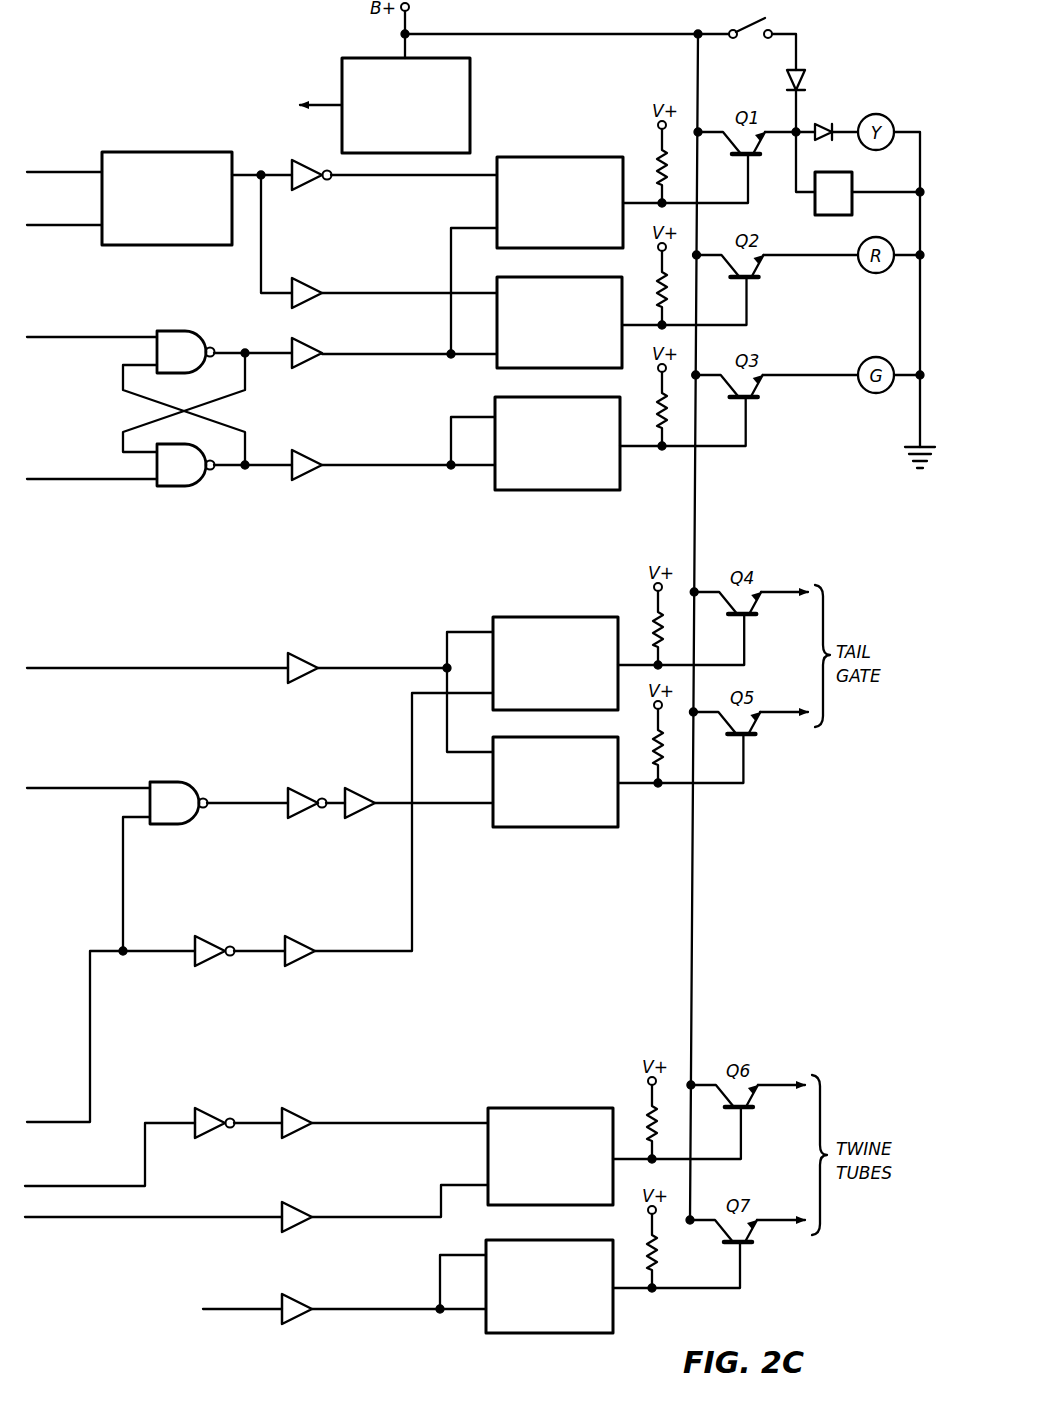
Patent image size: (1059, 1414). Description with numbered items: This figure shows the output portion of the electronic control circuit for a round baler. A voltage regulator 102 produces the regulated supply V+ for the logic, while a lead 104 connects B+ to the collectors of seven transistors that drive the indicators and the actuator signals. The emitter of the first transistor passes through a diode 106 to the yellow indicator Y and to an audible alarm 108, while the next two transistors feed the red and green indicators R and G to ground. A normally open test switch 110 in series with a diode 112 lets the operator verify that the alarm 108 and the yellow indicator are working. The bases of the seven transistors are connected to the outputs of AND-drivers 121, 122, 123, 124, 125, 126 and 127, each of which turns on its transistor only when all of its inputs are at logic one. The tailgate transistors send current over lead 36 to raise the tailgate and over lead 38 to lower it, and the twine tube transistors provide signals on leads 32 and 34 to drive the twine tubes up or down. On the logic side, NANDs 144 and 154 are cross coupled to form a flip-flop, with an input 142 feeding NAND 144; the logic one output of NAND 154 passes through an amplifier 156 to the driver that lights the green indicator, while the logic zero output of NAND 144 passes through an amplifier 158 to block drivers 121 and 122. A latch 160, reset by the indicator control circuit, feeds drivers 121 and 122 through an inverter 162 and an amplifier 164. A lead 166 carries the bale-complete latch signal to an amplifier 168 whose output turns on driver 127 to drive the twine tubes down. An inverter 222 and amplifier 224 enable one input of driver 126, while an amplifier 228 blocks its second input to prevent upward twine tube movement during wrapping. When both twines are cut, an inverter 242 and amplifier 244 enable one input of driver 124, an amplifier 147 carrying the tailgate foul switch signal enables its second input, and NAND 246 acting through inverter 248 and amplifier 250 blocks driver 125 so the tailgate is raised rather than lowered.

The voltage regulator 102 is at (363, 58).
The lead 104 is at (575, 32).
The diode 106 is at (827, 120).
The audible alarm 108 is at (815, 204).
The test switch 110 is at (728, 22).
The diode 112 is at (804, 72).
The AND-driver 121 is at (557, 158).
The AND-driver 122 is at (502, 280).
The AND-driver 123 is at (500, 402).
The AND-driver 124 is at (545, 615).
The AND-driver 125 is at (513, 742).
The AND-driver 126 is at (530, 1106).
The AND-driver 127 is at (503, 1240).
The input line 142 is at (130, 336).
The NAND 144 is at (183, 338).
The amplifier 147 is at (306, 662).
The NAND 154 is at (183, 481).
The amplifier 156 is at (305, 456).
The amplifier 158 is at (308, 345).
The latch 160 is at (183, 158).
The inverter 162 is at (308, 184).
The amplifier 164 is at (309, 288).
The lead 166 is at (260, 1308).
The amplifier 168 is at (302, 1301).
The inverter 222 is at (212, 1115).
The amplifier 224 is at (303, 1117).
The amplifier 228 is at (305, 1207).
The inverter 242 is at (210, 944).
The amplifier 244 is at (305, 944).
The NAND 246 is at (172, 786).
The inverter 248 is at (301, 796).
The amplifier 250 is at (360, 794).
The lead 32 is at (778, 1091).
The lead 34 is at (778, 1226).
The lead 36 is at (780, 598).
The lead 38 is at (780, 718).